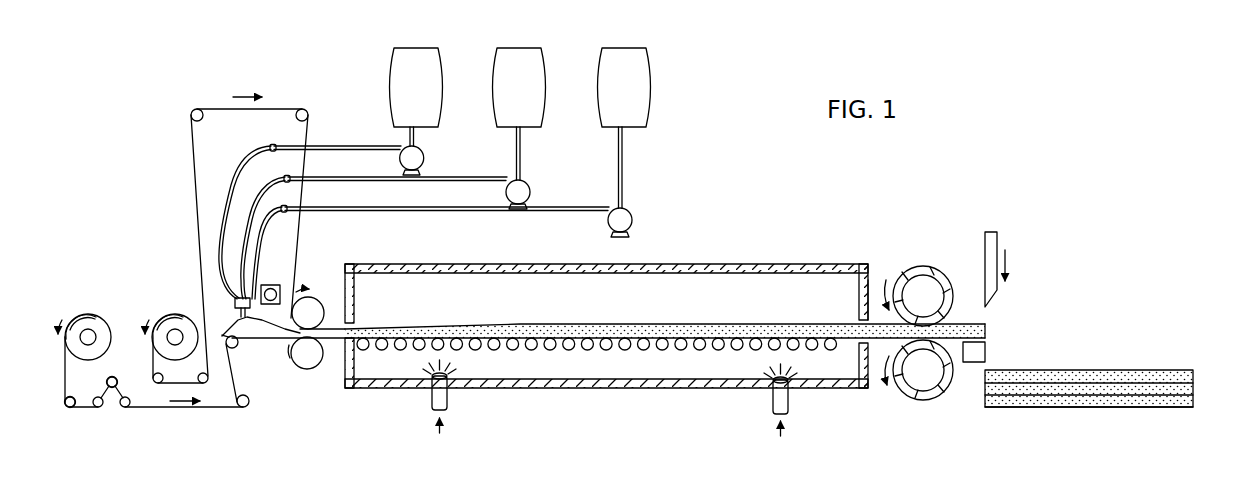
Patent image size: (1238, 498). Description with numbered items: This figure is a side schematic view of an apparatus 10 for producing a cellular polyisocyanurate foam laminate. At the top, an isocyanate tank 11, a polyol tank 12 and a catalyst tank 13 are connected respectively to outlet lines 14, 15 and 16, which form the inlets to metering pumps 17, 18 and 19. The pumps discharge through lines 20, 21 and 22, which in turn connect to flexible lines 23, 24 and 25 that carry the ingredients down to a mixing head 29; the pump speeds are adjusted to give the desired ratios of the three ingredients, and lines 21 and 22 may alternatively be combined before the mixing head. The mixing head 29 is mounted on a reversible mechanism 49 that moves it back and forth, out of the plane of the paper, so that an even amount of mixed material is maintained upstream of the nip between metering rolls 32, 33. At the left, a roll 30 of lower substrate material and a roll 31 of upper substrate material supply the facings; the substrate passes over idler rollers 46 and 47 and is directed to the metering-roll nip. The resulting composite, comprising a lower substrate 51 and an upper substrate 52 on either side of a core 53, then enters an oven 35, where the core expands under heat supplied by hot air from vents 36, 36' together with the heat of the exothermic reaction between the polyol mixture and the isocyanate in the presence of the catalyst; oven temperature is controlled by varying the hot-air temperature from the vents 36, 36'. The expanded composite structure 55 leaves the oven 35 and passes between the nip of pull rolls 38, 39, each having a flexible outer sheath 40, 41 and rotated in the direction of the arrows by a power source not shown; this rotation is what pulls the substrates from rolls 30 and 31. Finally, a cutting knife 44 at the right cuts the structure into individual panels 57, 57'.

The apparatus 10 is at (722, 231).
The isocyanate tank 11 is at (441, 66).
The polyol tank 12 is at (546, 66).
The catalyst tank 13 is at (653, 66).
The outlet line 14 is at (416, 137).
The outlet line 15 is at (522, 146).
The outlet line 16 is at (624, 146).
The metering pump 17 is at (424, 158).
The metering pump 18 is at (528, 186).
The metering pump 19 is at (630, 212).
The discharge line 20 is at (318, 146).
The discharge line 21 is at (323, 178).
The discharge line 22 is at (357, 208).
The flexible line 23 is at (244, 157).
The flexible line 24 is at (250, 188).
The flexible line 25 is at (281, 212).
The mixing head 29 is at (235, 304).
The roll of lower substrate material 30 is at (93, 314).
The roll of upper substrate material 31 is at (169, 314).
The metering roll 32 is at (316, 298).
The metering roll 33 is at (317, 367).
The oven 35 is at (772, 264).
The vent 36 is at (458, 396).
The vent 36' is at (799, 400).
The pull roll 38 is at (917, 288).
The pull roll 39 is at (913, 384).
The flexible outer sheath 40 is at (937, 281).
The flexible outer sheath 41 is at (925, 398).
The cutting knife 44 is at (996, 244).
The idler roller 46 is at (73, 397).
The idler roller 47 is at (114, 377).
The reversible mechanism 49 is at (271, 284).
The lower substrate 51 is at (405, 351).
The upper substrate 52 is at (375, 329).
The foam layer 53 is at (483, 322).
The composite structure 55 is at (866, 318).
The individual panel 57 is at (1089, 376).
The individual panel 57' is at (1089, 428).